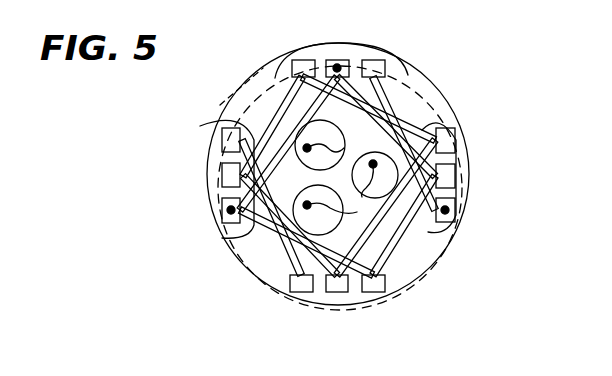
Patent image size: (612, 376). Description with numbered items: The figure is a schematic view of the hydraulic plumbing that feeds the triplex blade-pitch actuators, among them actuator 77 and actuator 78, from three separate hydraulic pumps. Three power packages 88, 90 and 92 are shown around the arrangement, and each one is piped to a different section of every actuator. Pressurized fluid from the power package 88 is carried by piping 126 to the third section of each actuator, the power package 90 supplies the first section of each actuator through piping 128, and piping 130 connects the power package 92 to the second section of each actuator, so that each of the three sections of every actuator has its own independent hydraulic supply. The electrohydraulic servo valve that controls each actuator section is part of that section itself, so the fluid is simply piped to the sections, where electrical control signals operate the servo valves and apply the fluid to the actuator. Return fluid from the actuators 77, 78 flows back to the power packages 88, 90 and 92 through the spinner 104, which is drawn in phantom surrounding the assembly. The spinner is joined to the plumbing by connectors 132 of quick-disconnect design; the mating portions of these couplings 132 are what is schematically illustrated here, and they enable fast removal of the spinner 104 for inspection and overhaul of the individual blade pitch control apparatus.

The actuator 77 is at (392, 67).
The actuator 78 is at (455, 143).
The power package 88 is at (282, 231).
The power package 90 is at (282, 110).
The power package 92 is at (433, 116).
The spinner 104 is at (250, 284).
The piping 126 is at (286, 107).
The piping 128 is at (200, 127).
The piping 130 is at (292, 105).
The connectors 132 is at (338, 65).